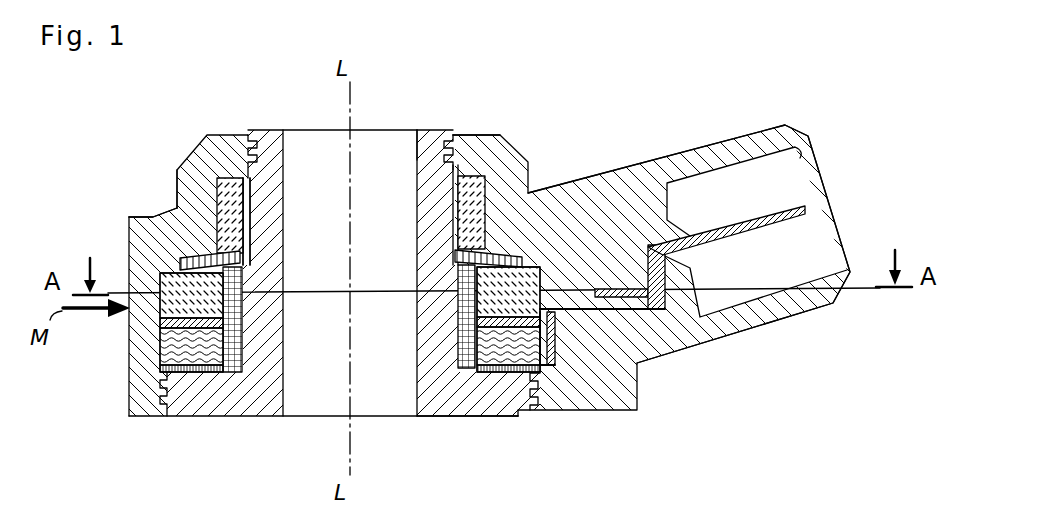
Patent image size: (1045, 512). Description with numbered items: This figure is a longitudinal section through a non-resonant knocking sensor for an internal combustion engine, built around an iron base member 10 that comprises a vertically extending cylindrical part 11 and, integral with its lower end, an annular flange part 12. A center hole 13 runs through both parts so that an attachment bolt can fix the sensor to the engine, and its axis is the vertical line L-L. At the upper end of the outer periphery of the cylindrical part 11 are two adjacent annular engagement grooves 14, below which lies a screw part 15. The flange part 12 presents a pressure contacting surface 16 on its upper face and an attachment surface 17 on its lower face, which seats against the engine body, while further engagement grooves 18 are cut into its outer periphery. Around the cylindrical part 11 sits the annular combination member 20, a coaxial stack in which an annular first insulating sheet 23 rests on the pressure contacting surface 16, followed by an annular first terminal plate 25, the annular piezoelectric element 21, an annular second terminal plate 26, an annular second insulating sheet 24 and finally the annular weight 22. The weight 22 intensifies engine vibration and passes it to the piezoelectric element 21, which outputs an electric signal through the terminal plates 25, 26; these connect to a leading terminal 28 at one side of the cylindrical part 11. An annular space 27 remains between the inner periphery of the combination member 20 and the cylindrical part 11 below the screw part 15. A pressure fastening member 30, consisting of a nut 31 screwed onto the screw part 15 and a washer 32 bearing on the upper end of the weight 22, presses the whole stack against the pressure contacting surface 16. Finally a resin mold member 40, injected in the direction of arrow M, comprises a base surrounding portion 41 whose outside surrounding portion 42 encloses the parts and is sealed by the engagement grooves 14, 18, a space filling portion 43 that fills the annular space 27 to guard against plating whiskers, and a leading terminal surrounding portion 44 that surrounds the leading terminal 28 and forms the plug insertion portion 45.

The base member 10 is at (200, 418).
The cylindrical part 11 is at (420, 194).
The flange part 12 is at (237, 405).
The center hole 13 is at (412, 137).
The engagement grooves 14 is at (468, 132).
The screw part 15 is at (450, 225).
The pressure contacting surface 16 is at (497, 355).
The attachment surface 17 is at (460, 418).
The engagement grooves 18 is at (540, 405).
The annular combination member 20 is at (160, 358).
The annular piezoelectric element 21 is at (160, 345).
The annular weight 22 is at (163, 282).
The annular first insulating sheet 23 is at (180, 410).
The annular second insulating sheet 24 is at (222, 307).
The annular first terminal plate 25 is at (217, 353).
The annular second terminal plate 26 is at (217, 333).
The annular space 27 is at (232, 282).
The leading terminal 28 is at (805, 210).
The pressure fastening member 30 is at (475, 168).
The nut 31 is at (243, 190).
The washer 32 is at (245, 262).
The resin mold member 40 is at (197, 152).
The base surrounding portion 41 is at (178, 190).
The outside surrounding portion 42 is at (150, 213).
The space filling portion 43 is at (460, 280).
The leading terminal surrounding portion 44 is at (688, 150).
The insertion portion 45 is at (812, 158).